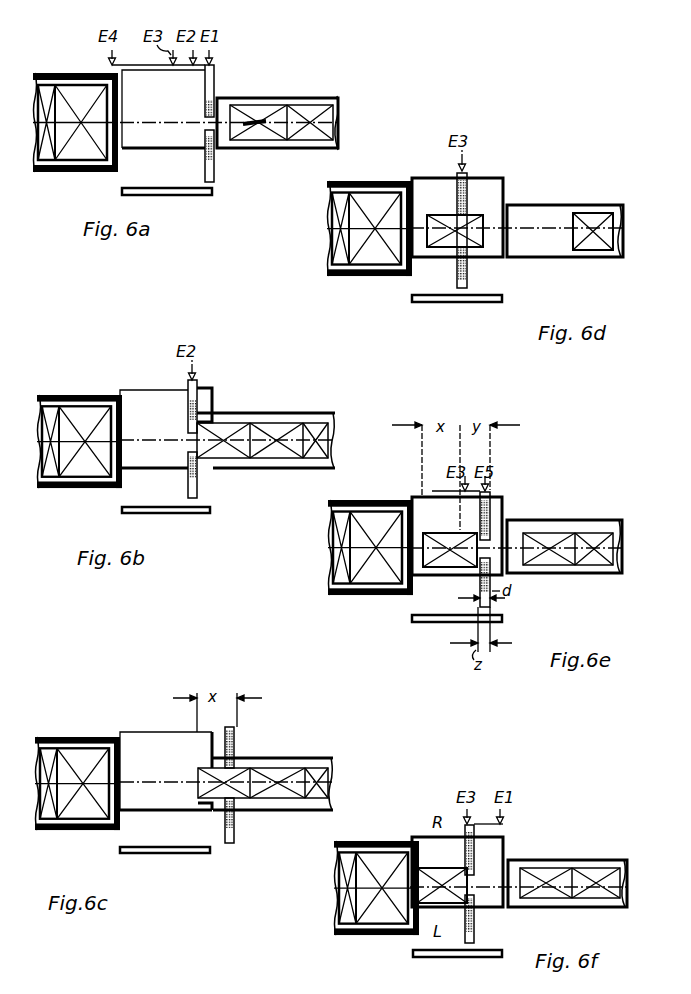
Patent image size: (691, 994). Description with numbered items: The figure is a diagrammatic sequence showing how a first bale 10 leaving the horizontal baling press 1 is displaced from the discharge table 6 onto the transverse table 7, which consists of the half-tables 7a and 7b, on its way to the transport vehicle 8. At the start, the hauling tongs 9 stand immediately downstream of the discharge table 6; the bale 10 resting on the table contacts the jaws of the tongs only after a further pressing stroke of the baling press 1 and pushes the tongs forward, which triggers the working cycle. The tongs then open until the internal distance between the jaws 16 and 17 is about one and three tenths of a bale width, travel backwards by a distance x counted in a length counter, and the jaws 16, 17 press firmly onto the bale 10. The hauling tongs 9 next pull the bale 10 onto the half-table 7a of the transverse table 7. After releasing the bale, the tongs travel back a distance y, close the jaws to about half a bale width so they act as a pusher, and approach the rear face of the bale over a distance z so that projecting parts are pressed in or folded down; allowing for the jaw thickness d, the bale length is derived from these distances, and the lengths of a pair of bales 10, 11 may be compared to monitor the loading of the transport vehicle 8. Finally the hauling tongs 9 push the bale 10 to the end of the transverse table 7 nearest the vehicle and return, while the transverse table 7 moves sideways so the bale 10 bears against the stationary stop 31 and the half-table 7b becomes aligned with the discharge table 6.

In FIG. 6A, the horizontal baling press 1 is at (333, 98).
In FIG. 6A, the discharge table 6 is at (302, 148).
In FIG. 6B, the discharge table 6 is at (284, 468).
In FIG. 6C, the discharge table 6 is at (299, 810).
In FIG. 6D, the discharge table 6 is at (536, 204).
In FIG. 6E, the discharge table 6 is at (564, 546).
In FIG. 6F, the discharge table 6 is at (575, 862).
In FIG. 6A, the transverse table 7 is at (163, 109).
In FIG. 6B, the transverse table 7 is at (137, 458).
In FIG. 6C, the transverse table 7 is at (174, 798).
In FIG. 6D, the transverse table 7 is at (457, 217).
In FIG. 6E, the transverse table 7 is at (457, 536).
In FIG. 6F, the transverse table 7 is at (418, 908).
In FIG. 6C, the half-table 7a is at (140, 800).
In FIG. 6D, the half-table 7a is at (503, 258).
In FIG. 6F, the half-table 7a is at (428, 908).
In FIG. 6F, the half-table 7b is at (440, 848).
In FIG. 6B, the transport vehicle 8 is at (88, 394).
In FIG. 6A, the hauling tongs 9 is at (214, 160).
In FIG. 6B, the hauling tongs 9 is at (197, 470).
In FIG. 6C, the hauling tongs 9 is at (236, 833).
In FIG. 6D, the hauling tongs 9 is at (470, 270).
In FIG. 6E, the hauling tongs 9 is at (485, 549).
In FIG. 6F, the hauling tongs 9 is at (476, 912).
In FIG. 6A, the first bale 10 is at (246, 115).
In FIG. 6B, the first bale 10 is at (220, 432).
In FIG. 6C, the first bale 10 is at (236, 768).
In FIG. 6D, the first bale 10 is at (450, 235).
In FIG. 6E, the first bale 10 is at (440, 560).
In FIG. 6F, the first bale 10 is at (435, 870).
In FIG. 6A, the bale 11 is at (300, 104).
In FIG. 6B, the bale 11 is at (268, 424).
In FIG. 6C, the bale 11 is at (278, 768).
In FIG. 6D, the bale 11 is at (590, 214).
In FIG. 6E, the bale 11 is at (545, 534).
In FIG. 6F, the bale 11 is at (526, 878).
In FIG. 6B, the jaw 16 is at (186, 407).
In FIG. 6C, the jaw 16 is at (236, 738).
In FIG. 6B, the jaw 17 is at (186, 476).
In FIG. 6C, the jaw 17 is at (226, 836).
In FIG. 6F, the stationary stop 31 is at (478, 957).